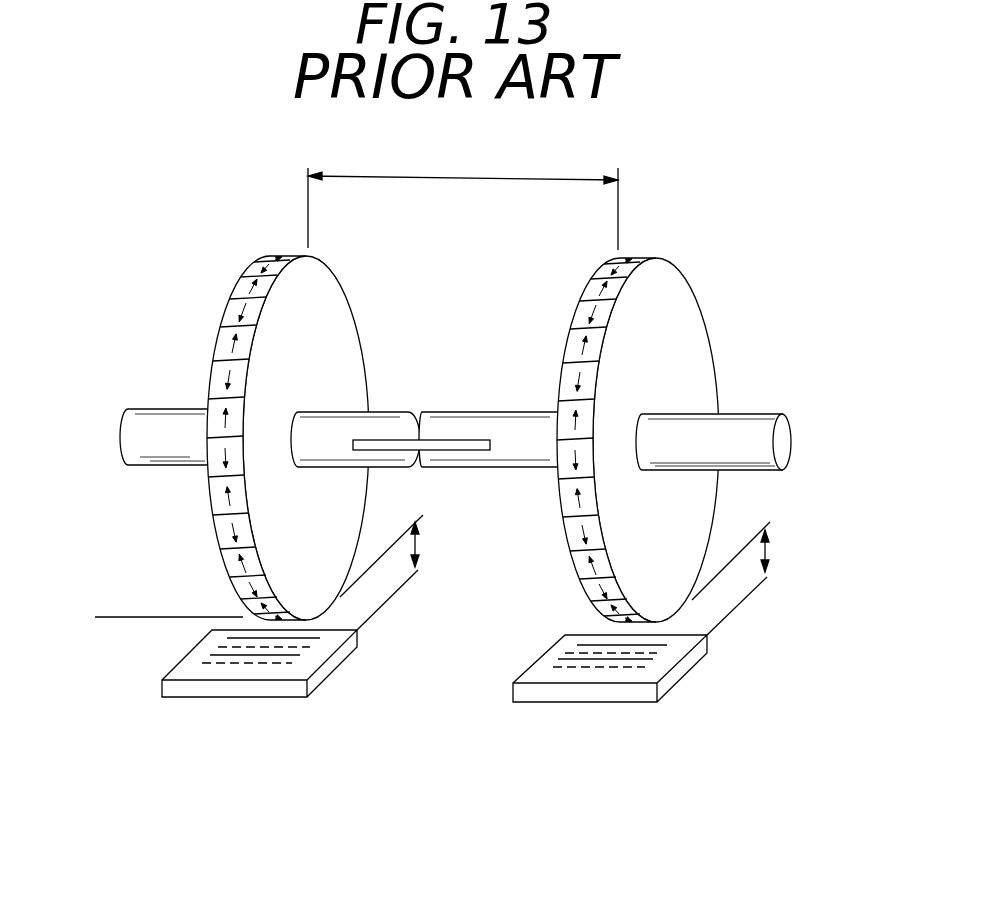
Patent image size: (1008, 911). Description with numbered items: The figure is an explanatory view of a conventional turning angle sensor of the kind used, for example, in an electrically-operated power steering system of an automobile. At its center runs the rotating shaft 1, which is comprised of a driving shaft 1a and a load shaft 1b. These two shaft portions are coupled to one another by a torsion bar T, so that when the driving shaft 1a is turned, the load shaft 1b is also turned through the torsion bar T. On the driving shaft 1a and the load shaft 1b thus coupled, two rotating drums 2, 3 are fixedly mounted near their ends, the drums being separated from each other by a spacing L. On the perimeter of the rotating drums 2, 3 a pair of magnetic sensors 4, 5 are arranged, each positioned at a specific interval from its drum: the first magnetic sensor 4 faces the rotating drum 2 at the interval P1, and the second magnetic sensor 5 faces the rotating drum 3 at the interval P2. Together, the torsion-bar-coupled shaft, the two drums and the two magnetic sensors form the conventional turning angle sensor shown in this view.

The rotating shaft 1 is at (478, 439).
The driving shaft 1a is at (122, 433).
The load shaft 1b is at (784, 437).
The rotating drum 2 is at (348, 341).
The rotating drum 3 is at (700, 347).
The magnetic sensor 4 is at (240, 690).
The magnetic sensor 5 is at (583, 695).
The torsion bar T is at (475, 451).
The spacing L is at (463, 200).
The interval P1 is at (397, 572).
The interval P2 is at (748, 578).